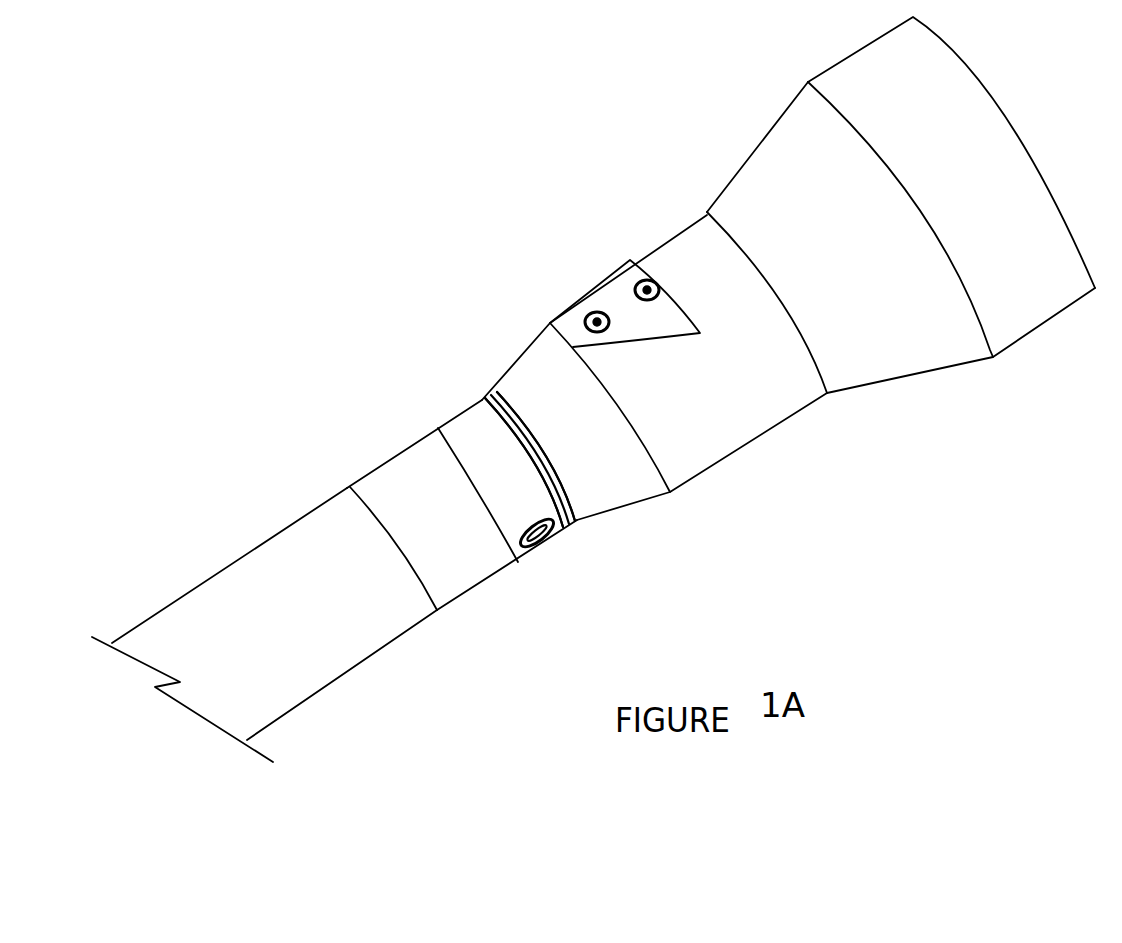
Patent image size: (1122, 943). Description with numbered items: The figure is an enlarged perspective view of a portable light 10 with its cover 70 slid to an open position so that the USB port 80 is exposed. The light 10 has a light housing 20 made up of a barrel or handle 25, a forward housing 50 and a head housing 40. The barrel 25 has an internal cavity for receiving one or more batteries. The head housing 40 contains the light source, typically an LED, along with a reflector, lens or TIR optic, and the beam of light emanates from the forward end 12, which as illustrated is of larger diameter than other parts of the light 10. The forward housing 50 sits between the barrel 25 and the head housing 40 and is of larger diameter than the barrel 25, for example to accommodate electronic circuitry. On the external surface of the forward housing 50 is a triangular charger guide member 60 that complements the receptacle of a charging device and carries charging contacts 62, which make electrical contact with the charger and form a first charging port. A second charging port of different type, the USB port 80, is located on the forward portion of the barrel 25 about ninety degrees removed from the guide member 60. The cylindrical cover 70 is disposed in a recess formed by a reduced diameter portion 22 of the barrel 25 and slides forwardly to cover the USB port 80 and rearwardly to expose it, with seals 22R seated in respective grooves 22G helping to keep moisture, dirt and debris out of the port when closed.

The portable light 10 is at (316, 257).
The forward end 12 is at (1041, 141).
The light housing 20 is at (203, 566).
The reduced diameter portion 22 is at (465, 420).
The grooves 22G is at (473, 400).
The seals 22R is at (553, 530).
The barrel 25 is at (337, 663).
The head housing 40 is at (930, 373).
The forward housing 50 is at (730, 457).
The charger guide member 60 is at (613, 283).
The charging contacts 62 is at (647, 279).
The cover 70 is at (397, 456).
The USB port 80 is at (547, 543).